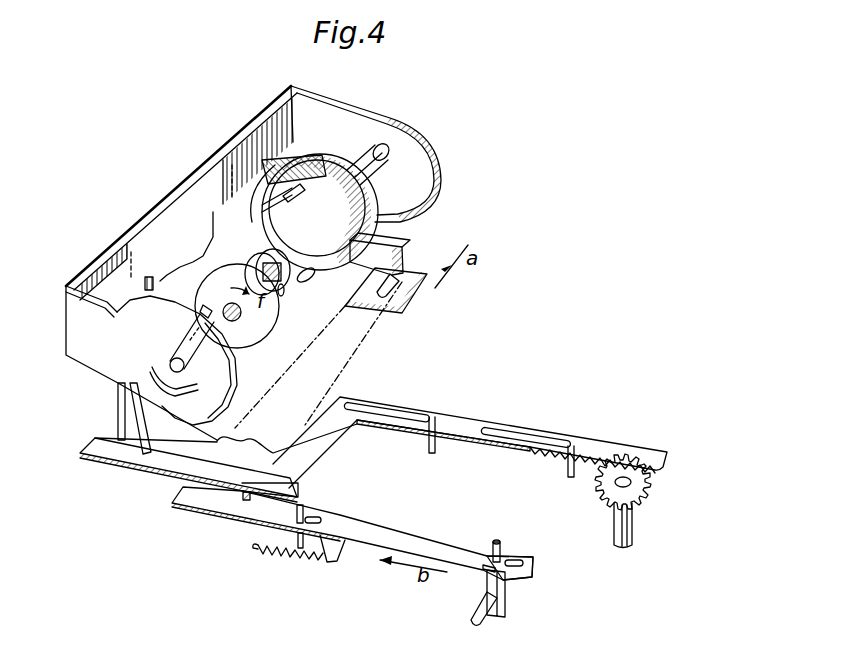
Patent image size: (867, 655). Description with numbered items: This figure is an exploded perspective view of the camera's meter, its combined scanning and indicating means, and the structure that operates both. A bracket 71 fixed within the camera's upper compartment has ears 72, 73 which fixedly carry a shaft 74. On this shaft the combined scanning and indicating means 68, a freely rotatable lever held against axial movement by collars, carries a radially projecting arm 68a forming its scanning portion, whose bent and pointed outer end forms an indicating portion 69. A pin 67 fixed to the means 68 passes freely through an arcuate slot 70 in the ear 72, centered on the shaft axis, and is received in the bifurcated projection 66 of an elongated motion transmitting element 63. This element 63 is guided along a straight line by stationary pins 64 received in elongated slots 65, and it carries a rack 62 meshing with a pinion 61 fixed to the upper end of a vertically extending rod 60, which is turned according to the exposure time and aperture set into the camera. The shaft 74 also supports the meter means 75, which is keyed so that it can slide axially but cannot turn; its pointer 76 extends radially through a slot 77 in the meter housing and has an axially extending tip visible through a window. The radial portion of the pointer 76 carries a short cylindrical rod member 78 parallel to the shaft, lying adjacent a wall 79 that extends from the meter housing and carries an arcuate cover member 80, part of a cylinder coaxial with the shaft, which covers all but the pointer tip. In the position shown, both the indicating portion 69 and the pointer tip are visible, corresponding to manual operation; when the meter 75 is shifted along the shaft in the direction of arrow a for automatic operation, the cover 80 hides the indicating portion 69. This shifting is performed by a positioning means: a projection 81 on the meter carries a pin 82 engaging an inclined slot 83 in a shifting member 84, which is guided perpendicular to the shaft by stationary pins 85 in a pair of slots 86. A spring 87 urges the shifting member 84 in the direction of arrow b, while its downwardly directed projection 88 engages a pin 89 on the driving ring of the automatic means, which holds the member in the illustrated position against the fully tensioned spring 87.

The rod 60 is at (620, 532).
The pinion 61 is at (612, 489).
The rack 62 is at (605, 460).
The motion transmitting element 63 is at (460, 425).
The stationary pins 64 is at (437, 415).
The elongated slots 65 is at (398, 408).
The bifurcated projection 66 is at (127, 434).
The pin 67 is at (206, 318).
The combined scanning and indicating means 68 is at (257, 323).
The radially projecting arm 68a is at (300, 286).
The indicating portion 69 is at (312, 283).
The arcuate slot 70 is at (177, 394).
The bracket 71 is at (182, 200).
The ear 72 is at (150, 320).
The ear 73 is at (418, 160).
The shaft 74 is at (234, 323).
The meter means 75 is at (372, 199).
The pointer 76 is at (297, 199).
The slot 77 is at (253, 215).
The rod member 78 is at (287, 229).
The wall 79 is at (350, 240).
The arcuate cover member 80 is at (288, 178).
The projection 81 is at (405, 249).
The pin 82 is at (396, 279).
The inclined slot 83 is at (410, 292).
The shifting member 84 is at (277, 468).
The stationary pins 85 is at (310, 510).
The slots 86 is at (335, 520).
The spring 87 is at (300, 558).
The downwardly directed projection 88 is at (507, 604).
The pin 89 is at (472, 607).